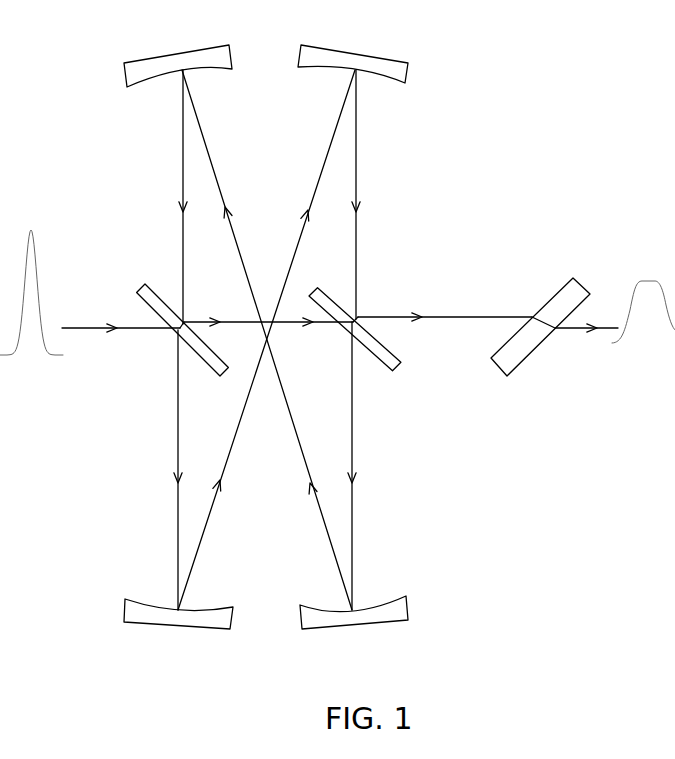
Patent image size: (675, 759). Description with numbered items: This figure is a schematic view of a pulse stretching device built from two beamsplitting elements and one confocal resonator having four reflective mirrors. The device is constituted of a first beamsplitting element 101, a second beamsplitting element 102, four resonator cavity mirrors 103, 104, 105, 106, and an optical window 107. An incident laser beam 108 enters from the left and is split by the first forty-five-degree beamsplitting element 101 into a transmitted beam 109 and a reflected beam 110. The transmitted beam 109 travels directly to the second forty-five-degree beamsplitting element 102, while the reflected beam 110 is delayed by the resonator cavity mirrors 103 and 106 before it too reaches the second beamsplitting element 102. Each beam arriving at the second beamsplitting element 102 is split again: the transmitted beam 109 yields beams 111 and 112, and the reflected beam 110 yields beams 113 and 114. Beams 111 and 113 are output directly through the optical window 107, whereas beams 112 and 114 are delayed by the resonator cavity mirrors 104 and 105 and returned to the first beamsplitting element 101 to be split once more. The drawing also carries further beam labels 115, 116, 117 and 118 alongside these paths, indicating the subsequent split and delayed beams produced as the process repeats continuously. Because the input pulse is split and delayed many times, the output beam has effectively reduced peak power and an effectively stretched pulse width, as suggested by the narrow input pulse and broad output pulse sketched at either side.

The beamsplitting element 101 is at (192, 353).
The beamsplitting element 102 is at (390, 345).
The resonator cavity mirror 103 is at (178, 630).
The resonator cavity mirror 104 is at (357, 629).
The resonator cavity mirror 105 is at (178, 54).
The resonator cavity mirror 106 is at (357, 48).
The optical window 107 is at (540, 347).
The incident laser beam 108 is at (99, 328).
The transmitted beam 109 is at (268, 253).
The reflected beam 110 is at (269, 340).
The beam 111 is at (445, 279).
The beam 112 is at (271, 340).
The beam 113 is at (500, 317).
The beam 114 is at (393, 462).
The pulse 115 is at (268, 265).
The pulse 116 is at (269, 340).
The pulse 117 is at (227, 320).
The pulse 118 is at (140, 455).